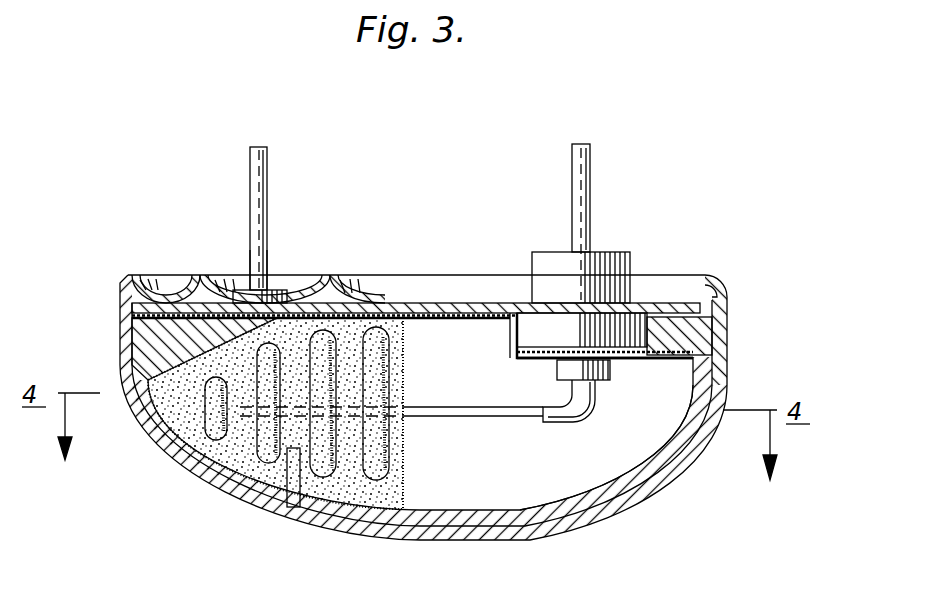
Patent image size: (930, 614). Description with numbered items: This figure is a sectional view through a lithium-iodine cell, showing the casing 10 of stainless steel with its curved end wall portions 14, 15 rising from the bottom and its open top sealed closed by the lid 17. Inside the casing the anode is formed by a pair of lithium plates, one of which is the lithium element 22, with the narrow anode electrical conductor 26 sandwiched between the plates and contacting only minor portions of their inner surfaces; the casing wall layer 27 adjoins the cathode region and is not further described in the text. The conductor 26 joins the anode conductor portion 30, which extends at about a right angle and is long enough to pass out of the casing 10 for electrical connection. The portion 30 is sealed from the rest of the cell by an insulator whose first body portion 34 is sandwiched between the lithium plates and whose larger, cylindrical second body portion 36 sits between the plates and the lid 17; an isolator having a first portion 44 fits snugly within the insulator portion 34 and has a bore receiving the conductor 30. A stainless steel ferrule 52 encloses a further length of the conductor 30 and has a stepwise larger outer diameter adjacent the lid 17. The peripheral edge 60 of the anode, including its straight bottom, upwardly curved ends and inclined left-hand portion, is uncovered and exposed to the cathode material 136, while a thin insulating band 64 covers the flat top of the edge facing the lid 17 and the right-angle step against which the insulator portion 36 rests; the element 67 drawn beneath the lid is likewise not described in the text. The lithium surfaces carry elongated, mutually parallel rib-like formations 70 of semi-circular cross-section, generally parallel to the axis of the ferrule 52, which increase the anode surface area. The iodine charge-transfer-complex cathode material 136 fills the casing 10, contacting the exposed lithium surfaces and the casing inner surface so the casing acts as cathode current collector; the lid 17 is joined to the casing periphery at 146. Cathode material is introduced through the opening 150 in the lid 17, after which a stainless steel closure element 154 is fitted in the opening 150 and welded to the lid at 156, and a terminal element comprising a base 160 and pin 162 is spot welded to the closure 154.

The casing 10 is at (676, 193).
The end wall portion 14 is at (120, 305).
The end wall portion 15 is at (727, 325).
The lid 17 is at (430, 303).
The lithium element 22 is at (168, 445).
The anode electrical conductor 26 is at (510, 425).
The inner liner 27 is at (607, 443).
The anode conductor portion 30 is at (572, 160).
The first body portion of insulator 34 is at (610, 372).
The second body portion of insulator 36 is at (712, 340).
The first portion of isolator 44 is at (693, 433).
The ferrule 52 is at (605, 252).
The peripheral edge 60 is at (383, 528).
The insulating element 64 is at (713, 360).
The gasket 67 is at (476, 303).
The formations 70 is at (232, 478).
The cathode material 136 is at (148, 340).
The weld location 146 is at (710, 276).
The opening 150 is at (345, 290).
The closure element 154 is at (302, 278).
The weld 156 is at (200, 277).
The terminal base 160 is at (250, 290).
The terminal pin 162 is at (250, 160).